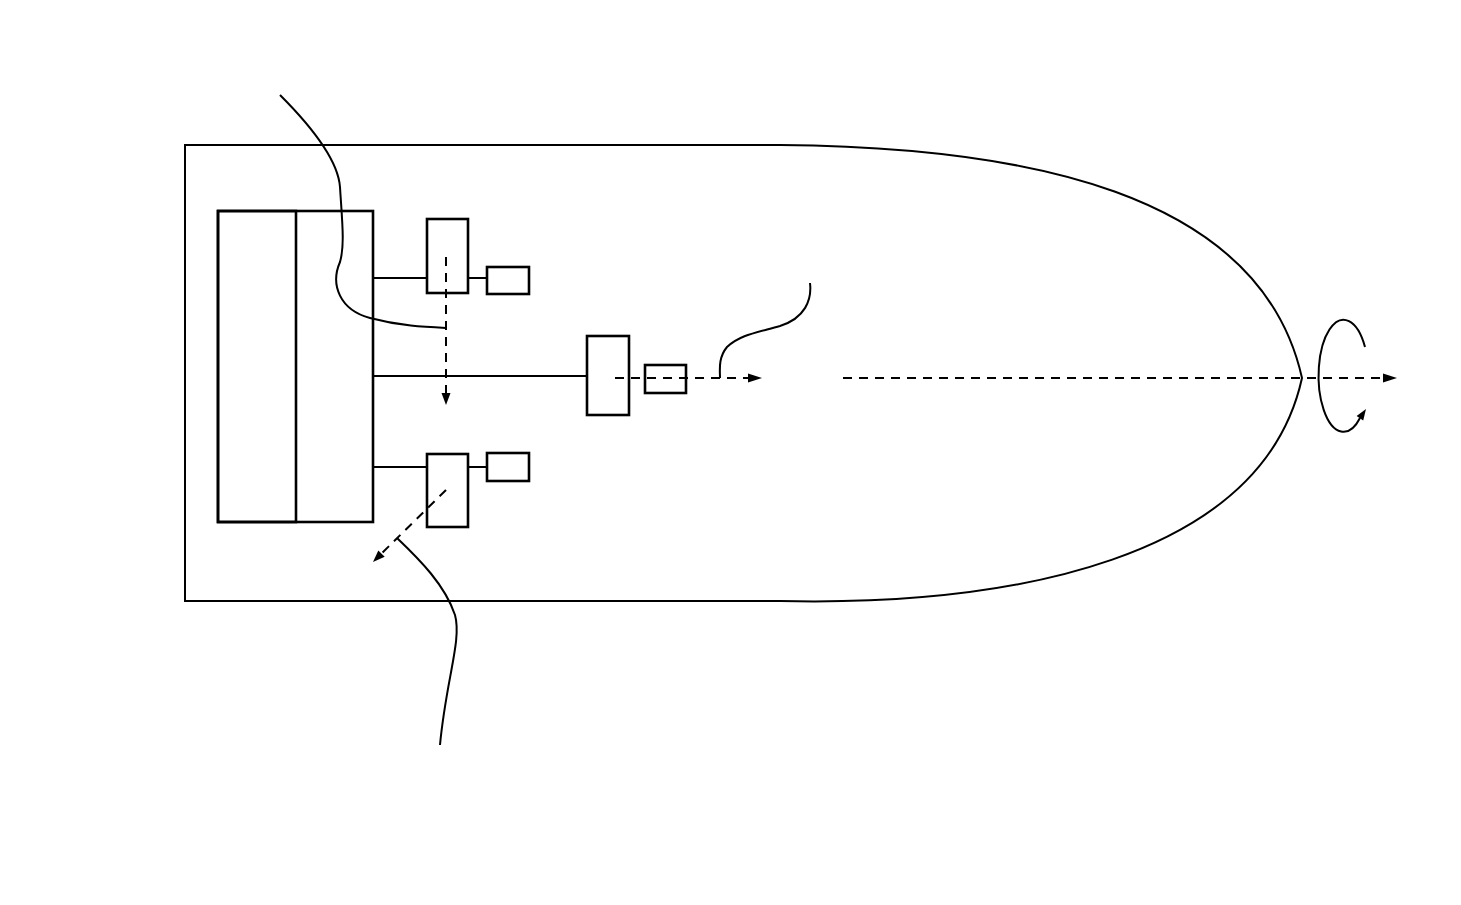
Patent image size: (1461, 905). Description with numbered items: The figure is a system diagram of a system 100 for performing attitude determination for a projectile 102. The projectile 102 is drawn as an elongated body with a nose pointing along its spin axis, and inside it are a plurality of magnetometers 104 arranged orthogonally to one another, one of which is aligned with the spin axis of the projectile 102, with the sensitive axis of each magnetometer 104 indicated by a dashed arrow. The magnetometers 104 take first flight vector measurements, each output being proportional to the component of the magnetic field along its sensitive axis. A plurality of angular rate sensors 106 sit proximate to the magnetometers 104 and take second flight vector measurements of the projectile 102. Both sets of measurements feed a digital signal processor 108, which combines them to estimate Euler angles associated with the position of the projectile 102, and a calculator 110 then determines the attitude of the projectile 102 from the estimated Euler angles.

The system 100 is at (1197, 147).
The projectile 102 is at (975, 143).
The magnetometers 104 is at (557, 643).
The angular rate sensors 106 is at (790, 465).
The digital signal processor 108 is at (332, 497).
The calculator 110 is at (250, 502).